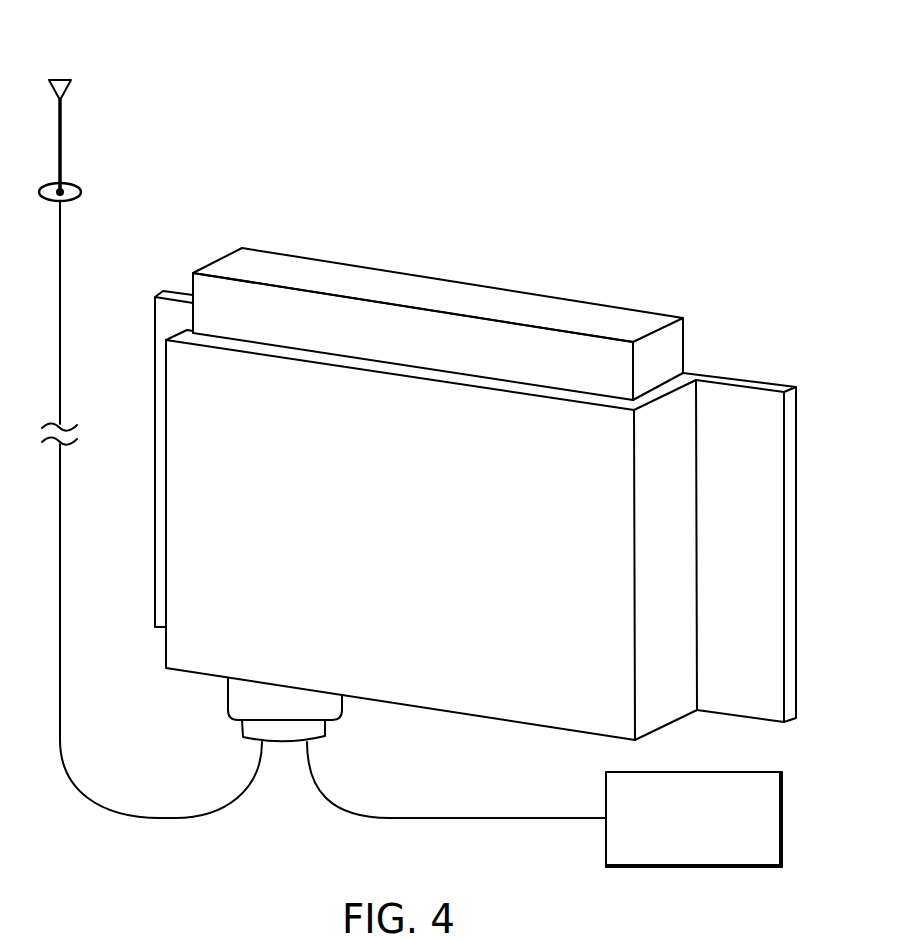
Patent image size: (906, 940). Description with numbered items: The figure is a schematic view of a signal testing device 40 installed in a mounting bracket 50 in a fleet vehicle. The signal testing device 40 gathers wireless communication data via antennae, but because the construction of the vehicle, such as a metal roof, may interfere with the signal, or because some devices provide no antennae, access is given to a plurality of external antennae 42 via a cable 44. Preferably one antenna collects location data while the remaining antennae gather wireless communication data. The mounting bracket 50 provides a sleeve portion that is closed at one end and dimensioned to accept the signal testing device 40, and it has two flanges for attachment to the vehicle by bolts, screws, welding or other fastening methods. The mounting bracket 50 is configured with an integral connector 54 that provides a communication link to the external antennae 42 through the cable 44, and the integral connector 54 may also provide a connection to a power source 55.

The signal testing device 40 is at (678, 328).
The external antennae 42 is at (70, 80).
The cable 44 is at (60, 712).
The mounting bracket 50 is at (797, 460).
The integral connector 54 is at (327, 727).
The power source 55 is at (782, 820).